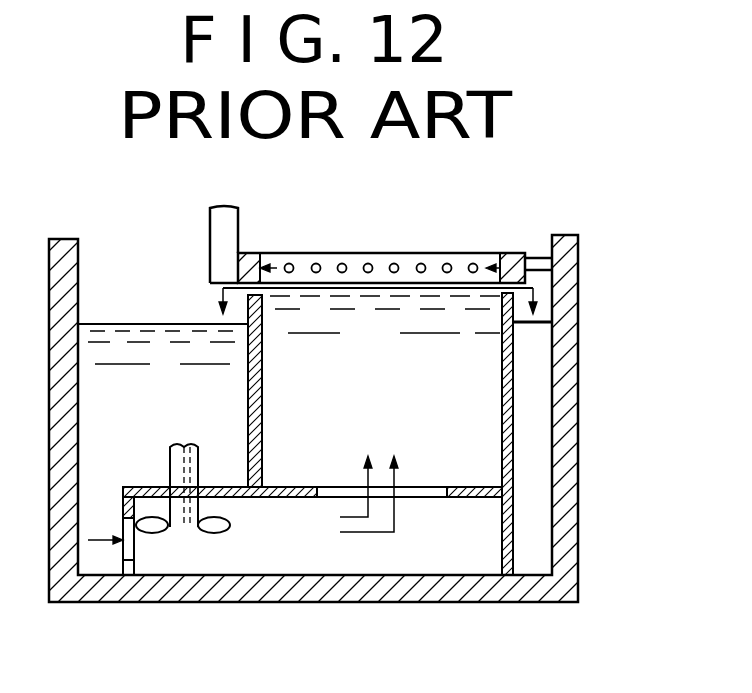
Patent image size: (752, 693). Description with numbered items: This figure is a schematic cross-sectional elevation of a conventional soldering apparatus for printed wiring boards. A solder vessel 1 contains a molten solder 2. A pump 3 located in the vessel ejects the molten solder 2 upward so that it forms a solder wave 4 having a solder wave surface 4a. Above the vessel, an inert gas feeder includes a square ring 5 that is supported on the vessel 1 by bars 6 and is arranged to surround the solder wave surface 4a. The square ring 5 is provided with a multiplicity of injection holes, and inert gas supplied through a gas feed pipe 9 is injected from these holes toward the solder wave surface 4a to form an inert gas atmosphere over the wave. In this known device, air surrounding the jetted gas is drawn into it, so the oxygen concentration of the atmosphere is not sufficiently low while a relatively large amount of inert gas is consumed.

The solder vessel 1 is at (578, 411).
The molten solder 2 is at (483, 467).
The pump 3 is at (212, 533).
The solder wave 4 is at (452, 288).
The solder wave surface 4a is at (433, 290).
The square ring 5 is at (350, 251).
The bars 6 is at (537, 257).
The gas feed pipe 9 is at (222, 240).